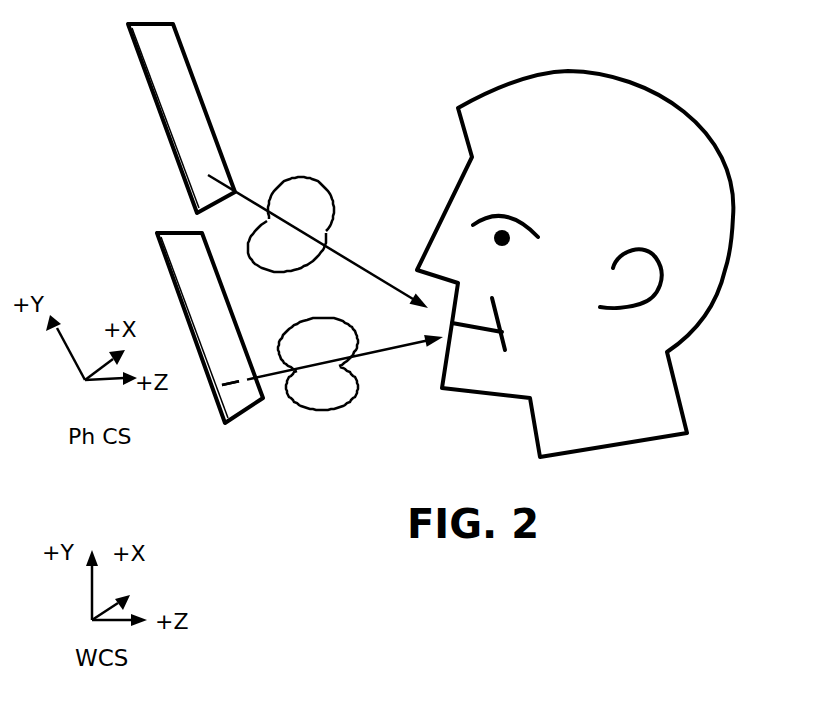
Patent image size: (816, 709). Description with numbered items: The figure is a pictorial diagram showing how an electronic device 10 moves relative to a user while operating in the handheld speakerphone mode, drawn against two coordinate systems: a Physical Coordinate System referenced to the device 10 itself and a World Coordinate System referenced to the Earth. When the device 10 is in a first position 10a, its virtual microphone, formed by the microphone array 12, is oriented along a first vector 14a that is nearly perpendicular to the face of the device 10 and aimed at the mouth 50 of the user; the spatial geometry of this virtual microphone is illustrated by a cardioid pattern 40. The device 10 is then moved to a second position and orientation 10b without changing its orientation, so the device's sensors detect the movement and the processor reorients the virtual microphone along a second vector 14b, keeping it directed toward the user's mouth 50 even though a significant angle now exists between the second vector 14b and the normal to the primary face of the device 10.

The device 10 is at (161, 223).
The first position 10a is at (177, 327).
The second position and orientation 10b is at (147, 118).
The microphone array 12 is at (224, 385).
The first vector 14a is at (377, 352).
The second vector 14b is at (380, 277).
The cardioid pattern 40 is at (314, 215).
The mouth 50 is at (458, 338).